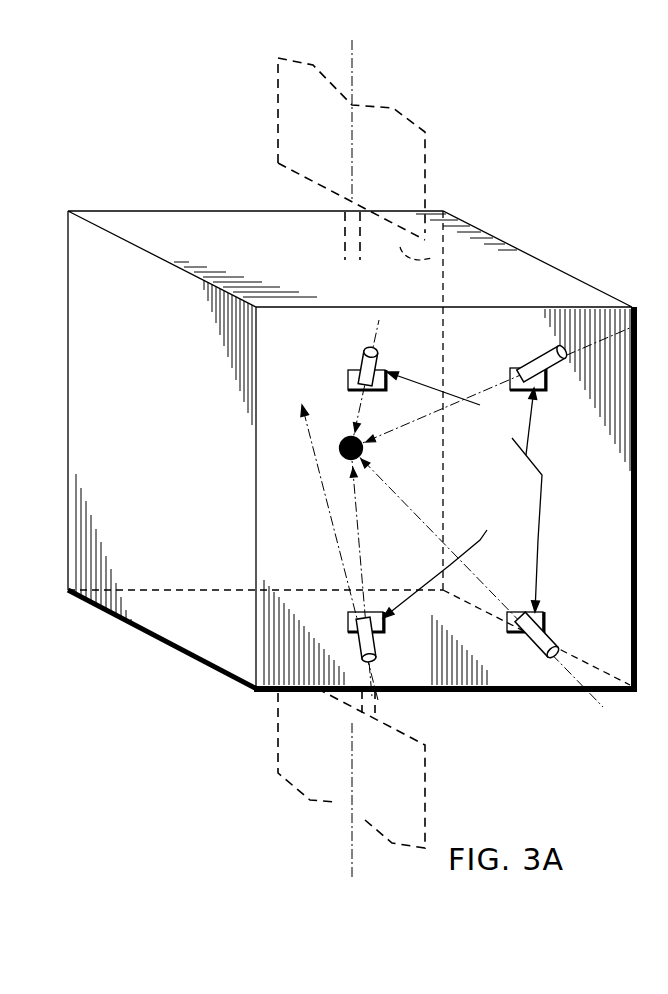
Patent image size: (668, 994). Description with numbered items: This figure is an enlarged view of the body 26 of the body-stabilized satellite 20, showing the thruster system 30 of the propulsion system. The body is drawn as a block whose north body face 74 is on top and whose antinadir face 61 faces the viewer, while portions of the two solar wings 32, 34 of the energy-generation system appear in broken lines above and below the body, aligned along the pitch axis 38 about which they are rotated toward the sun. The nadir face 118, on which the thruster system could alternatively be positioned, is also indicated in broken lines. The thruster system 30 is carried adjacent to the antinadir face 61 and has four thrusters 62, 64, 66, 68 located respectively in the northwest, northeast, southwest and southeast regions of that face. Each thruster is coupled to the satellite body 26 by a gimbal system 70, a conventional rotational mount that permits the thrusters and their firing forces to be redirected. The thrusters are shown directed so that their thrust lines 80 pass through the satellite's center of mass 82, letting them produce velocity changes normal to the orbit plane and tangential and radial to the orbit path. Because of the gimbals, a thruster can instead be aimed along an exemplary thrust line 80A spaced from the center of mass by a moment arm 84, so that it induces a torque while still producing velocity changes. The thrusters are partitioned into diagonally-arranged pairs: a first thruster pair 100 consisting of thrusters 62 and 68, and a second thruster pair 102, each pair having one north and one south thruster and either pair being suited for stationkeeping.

The body-stabilized satellite 20 is at (528, 213).
The satellite body 26 is at (587, 278).
The thruster system 30 is at (362, 348).
The solar wing 32 is at (278, 105).
The solar wing 34 is at (278, 720).
The pitch axis 38 is at (349, 460).
The antinadir face 61 is at (450, 672).
The thruster 62 is at (349, 365).
The thruster 64 is at (552, 380).
The thruster 66 is at (358, 647).
The thruster 68 is at (565, 605).
The gimbal system 70 is at (513, 367).
The north body face 74 is at (213, 270).
The thrust line 80 is at (497, 385).
The thrust line 80A is at (322, 512).
The center of mass 82 is at (365, 445).
The moment arm 84 is at (318, 455).
The first thruster pair 100 is at (453, 404).
The second thruster pair 102 is at (526, 455).
The nadir face 118 is at (400, 247).